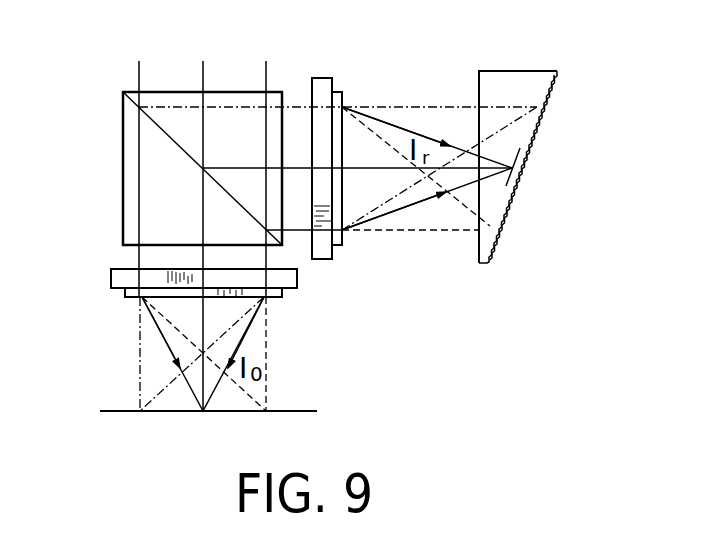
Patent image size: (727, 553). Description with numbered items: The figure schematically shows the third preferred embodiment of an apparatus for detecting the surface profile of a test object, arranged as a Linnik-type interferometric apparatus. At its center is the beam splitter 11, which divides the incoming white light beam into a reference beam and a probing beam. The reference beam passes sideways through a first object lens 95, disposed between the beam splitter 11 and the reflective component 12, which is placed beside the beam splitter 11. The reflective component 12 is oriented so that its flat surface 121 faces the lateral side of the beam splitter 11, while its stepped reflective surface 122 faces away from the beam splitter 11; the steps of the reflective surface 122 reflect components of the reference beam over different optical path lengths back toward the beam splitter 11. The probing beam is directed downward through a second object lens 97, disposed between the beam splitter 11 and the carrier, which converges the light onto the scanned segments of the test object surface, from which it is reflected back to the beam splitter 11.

The beam splitter 11 is at (132, 162).
The second object lens 97 is at (124, 278).
The first object lens 95 is at (322, 88).
The reflective component 12 is at (520, 66).
The reflective surface 122 is at (513, 167).
The flat surface 121 is at (480, 240).